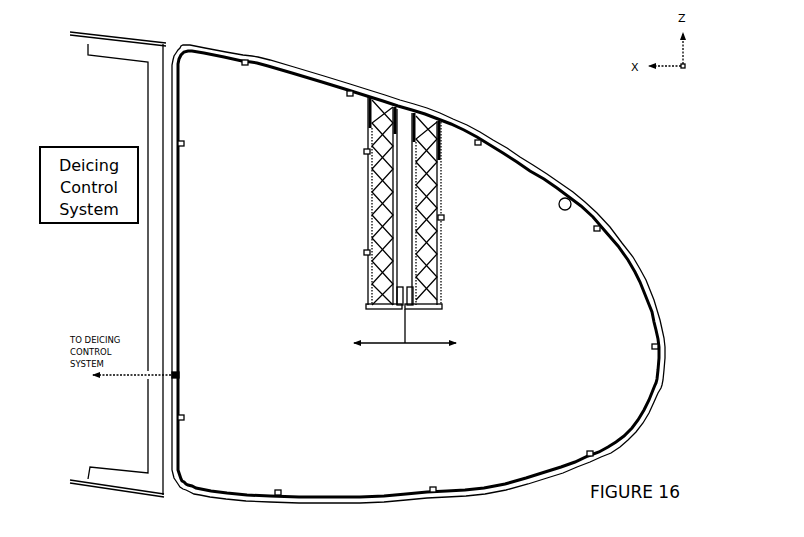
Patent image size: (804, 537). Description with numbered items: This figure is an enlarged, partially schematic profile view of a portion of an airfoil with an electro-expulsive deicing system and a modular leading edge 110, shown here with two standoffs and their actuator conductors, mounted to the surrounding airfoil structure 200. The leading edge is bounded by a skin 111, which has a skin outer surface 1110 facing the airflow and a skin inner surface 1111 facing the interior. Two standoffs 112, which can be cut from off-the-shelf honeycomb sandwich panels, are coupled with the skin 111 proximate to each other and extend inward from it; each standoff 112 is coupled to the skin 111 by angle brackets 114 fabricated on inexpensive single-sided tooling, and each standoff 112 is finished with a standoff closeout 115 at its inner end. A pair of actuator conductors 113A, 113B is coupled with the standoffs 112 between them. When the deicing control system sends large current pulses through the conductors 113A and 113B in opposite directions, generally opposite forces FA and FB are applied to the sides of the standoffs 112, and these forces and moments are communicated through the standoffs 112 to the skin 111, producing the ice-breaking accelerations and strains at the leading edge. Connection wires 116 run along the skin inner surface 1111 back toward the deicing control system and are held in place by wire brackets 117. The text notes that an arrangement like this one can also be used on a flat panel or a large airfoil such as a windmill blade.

The aircraft structure 200 is at (154, 35).
The modular leading edge 110 is at (570, 153).
The skin 111 is at (633, 259).
The skin outer surface 1110 is at (606, 227).
The skin inner surface 1111 is at (574, 199).
The standoff 112 is at (380, 220).
The conductor 113A is at (399, 289).
The conductor 113B is at (411, 288).
The angle bracket 114 is at (368, 104).
The standoff closeout 115 is at (369, 304).
The connection wire 116 is at (296, 78).
The wire bracket 117 is at (367, 152).